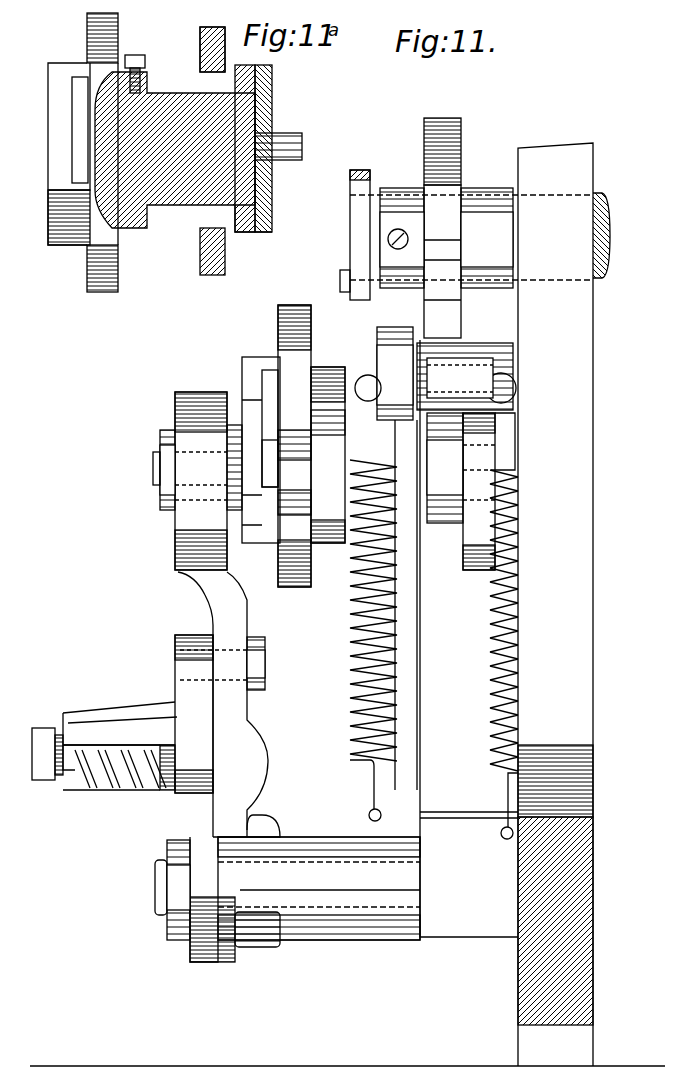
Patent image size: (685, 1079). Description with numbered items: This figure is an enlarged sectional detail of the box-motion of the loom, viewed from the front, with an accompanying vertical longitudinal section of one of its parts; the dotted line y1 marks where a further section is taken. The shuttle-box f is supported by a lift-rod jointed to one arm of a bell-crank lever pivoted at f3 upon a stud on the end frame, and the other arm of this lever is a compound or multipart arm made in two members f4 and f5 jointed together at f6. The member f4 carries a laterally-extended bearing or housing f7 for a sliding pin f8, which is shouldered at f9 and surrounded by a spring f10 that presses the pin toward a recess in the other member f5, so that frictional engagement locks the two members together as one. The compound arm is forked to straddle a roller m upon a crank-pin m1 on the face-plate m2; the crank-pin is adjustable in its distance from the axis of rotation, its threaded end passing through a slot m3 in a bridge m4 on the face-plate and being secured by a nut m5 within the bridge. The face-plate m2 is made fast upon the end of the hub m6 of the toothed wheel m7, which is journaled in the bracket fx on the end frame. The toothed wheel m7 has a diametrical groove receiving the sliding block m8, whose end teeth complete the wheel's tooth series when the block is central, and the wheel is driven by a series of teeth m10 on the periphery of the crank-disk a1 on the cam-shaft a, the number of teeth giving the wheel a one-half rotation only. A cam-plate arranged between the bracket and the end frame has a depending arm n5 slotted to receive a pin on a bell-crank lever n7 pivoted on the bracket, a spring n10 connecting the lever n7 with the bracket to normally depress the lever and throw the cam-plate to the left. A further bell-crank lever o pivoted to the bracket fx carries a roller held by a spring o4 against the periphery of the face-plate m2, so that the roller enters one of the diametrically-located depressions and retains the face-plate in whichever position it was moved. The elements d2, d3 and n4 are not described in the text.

In FIG. 11, the cam-shaft a is at (610, 235).
In FIG. 11, the crank-disk a1 is at (462, 140).
In FIG. 11, the set screw d2 is at (348, 288).
In FIG. 11, the lever arm d3 is at (352, 215).
In FIG. 11, the dotted line y' y' y1 is at (413, 200).
In FIG. 11, the roller m is at (160, 440).
In FIG. 11, the crank-pin m1 is at (152, 470).
In FIG. 11a, the face-plate m2 is at (88, 30).
In FIG. 11, the face-plate m2 is at (280, 325).
In FIG. 11a, the slot m3 is at (78, 108).
In FIG. 11, the slot m3 is at (262, 392).
In FIG. 11a, the bridge m4 is at (58, 62).
In FIG. 11, the bridge m4 is at (258, 366).
In FIG. 11, the nut m5 is at (270, 460).
In FIG. 11a, the hub m6 is at (138, 225).
In FIG. 11, the hub m6 is at (325, 366).
In FIG. 11a, the toothed wheel m7 is at (245, 232).
In FIG. 11, the toothed wheel m7 is at (440, 528).
In FIG. 11a, the sliding block m8 is at (272, 104).
In FIG. 11, the teeth m10 is at (445, 290).
In FIG. 11a, the shaft n4 is at (302, 140).
In FIG. 11, the depending arm n5 is at (478, 572).
In FIG. 11, the bell-crank lever n7 is at (510, 458).
In FIG. 11, the spring n10 is at (515, 535).
In FIG. 11, the bell-crank lever o is at (372, 383).
In FIG. 11, the spring o4 is at (355, 692).
In FIG. 11, the shuttle-box f is at (319, 803).
In FIG. 11a, the bracket fx is at (200, 45).
In FIG. 11, the bracket fx is at (421, 708).
In FIG. 11, the pivot f3 is at (155, 878).
In FIG. 11, the member f4 is at (195, 802).
In FIG. 11, the member f5 is at (212, 602).
In FIG. 11, the joint f6 is at (266, 652).
In FIG. 11, the bearing or housing f7 is at (100, 712).
In FIG. 11, the sliding pin f8 is at (95, 780).
In FIG. 11, the shoulder f9 is at (160, 785).
In FIG. 11, the spring f10 is at (75, 780).